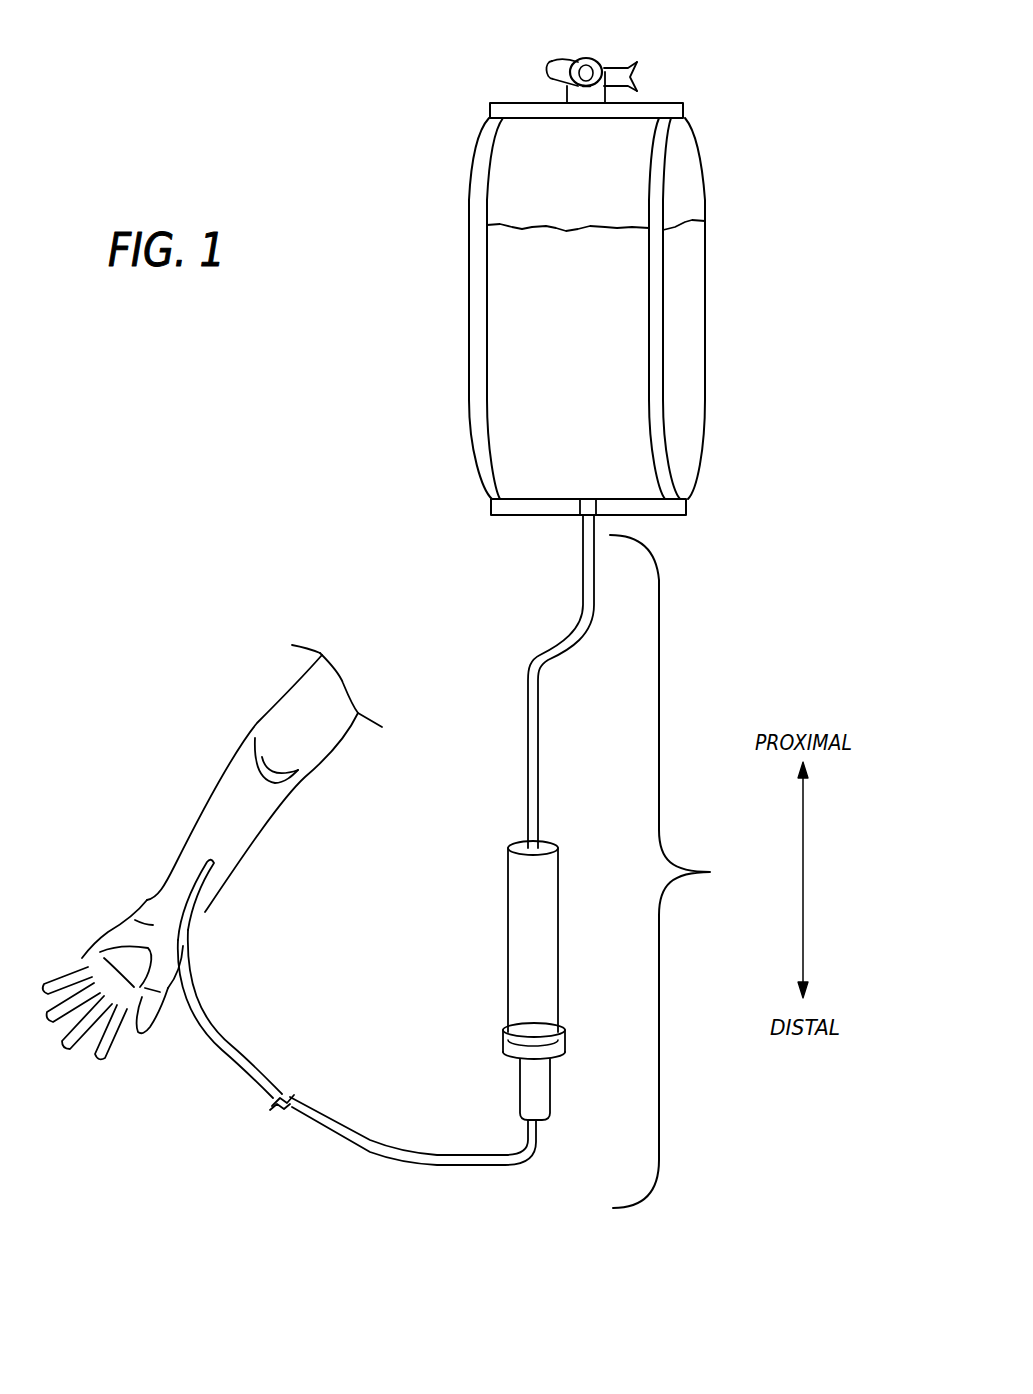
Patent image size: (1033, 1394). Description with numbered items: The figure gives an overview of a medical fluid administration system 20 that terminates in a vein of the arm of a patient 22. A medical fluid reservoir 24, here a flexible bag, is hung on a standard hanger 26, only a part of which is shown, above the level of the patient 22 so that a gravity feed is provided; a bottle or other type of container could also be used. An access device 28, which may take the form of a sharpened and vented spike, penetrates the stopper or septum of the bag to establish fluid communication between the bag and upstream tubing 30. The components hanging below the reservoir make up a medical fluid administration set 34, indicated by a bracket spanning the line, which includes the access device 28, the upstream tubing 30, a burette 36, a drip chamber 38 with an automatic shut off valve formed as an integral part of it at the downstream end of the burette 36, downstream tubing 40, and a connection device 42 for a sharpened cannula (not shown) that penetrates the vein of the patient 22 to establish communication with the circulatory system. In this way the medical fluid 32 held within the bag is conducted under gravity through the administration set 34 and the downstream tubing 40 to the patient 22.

The medical fluid administration system 20 is at (408, 535).
The patient 22 is at (290, 705).
The medical fluid reservoir 24 is at (693, 333).
The hanger 26 is at (614, 68).
The access device 28 is at (580, 520).
The upstream tubing 30 is at (540, 717).
The medical fluid 32 is at (503, 282).
The medical fluid administration set 34 is at (741, 890).
The burette 36 is at (560, 940).
The drip chamber 38 is at (552, 1087).
The downstream tubing 40 is at (422, 1168).
The connection device 42 is at (185, 903).